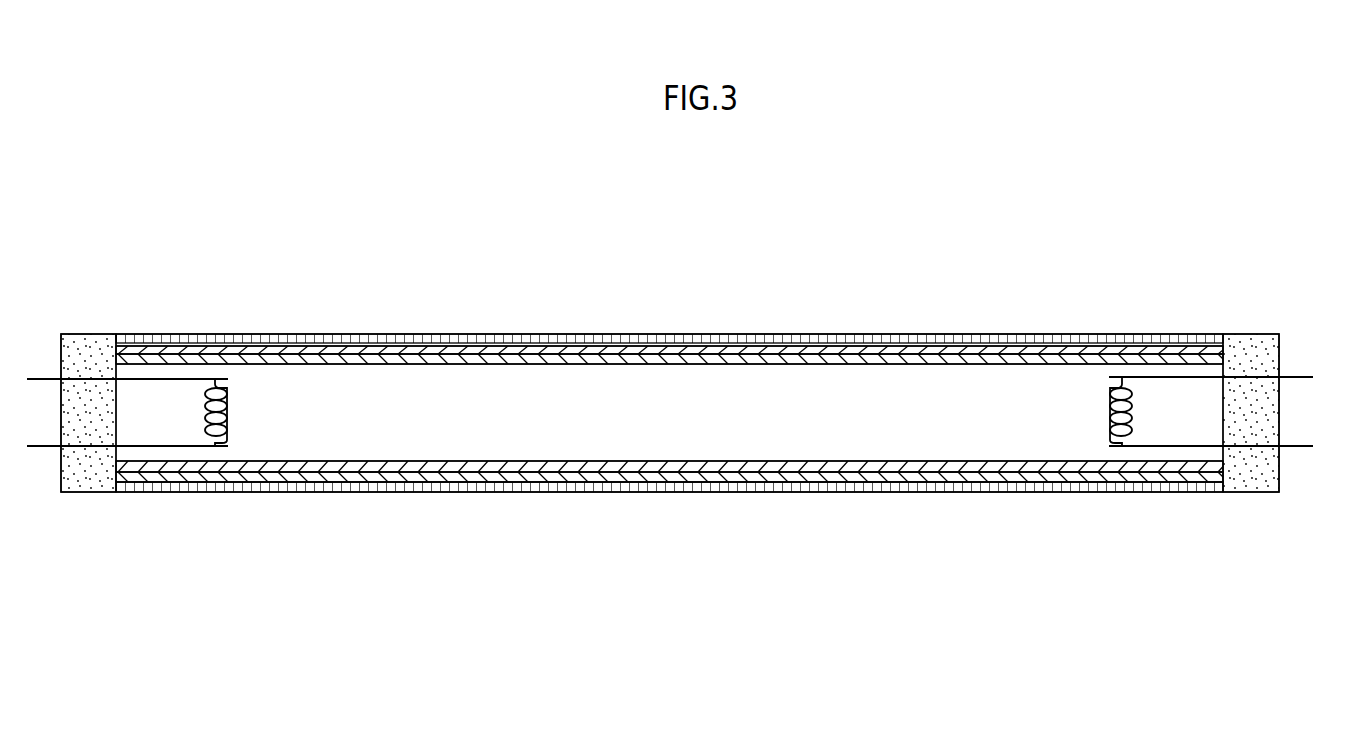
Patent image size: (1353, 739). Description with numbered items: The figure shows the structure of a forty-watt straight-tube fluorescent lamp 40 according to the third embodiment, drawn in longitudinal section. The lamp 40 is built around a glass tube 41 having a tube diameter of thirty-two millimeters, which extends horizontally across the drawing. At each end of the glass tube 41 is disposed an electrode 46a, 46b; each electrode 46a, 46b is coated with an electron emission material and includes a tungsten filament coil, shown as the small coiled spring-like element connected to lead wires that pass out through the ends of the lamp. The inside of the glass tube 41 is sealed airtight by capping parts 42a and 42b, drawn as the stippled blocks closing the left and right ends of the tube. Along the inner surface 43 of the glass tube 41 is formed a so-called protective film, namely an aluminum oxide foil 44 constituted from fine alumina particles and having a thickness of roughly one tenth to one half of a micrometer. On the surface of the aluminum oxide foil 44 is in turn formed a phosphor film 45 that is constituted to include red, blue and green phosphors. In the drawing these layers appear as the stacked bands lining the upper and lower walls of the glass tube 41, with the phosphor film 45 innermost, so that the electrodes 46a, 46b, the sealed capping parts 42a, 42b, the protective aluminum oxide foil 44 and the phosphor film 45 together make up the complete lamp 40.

The straight-tube fluorescent lamp 40 is at (546, 286).
The glass tube 41 is at (287, 523).
The capping part 42a is at (76, 488).
The capping part 42b is at (1262, 483).
The inner surface 43 is at (420, 488).
The aluminum oxide foil 44 is at (540, 480).
The phosphor film 45 is at (672, 462).
The electrode 46a is at (170, 379).
The electrode 46b is at (1178, 377).